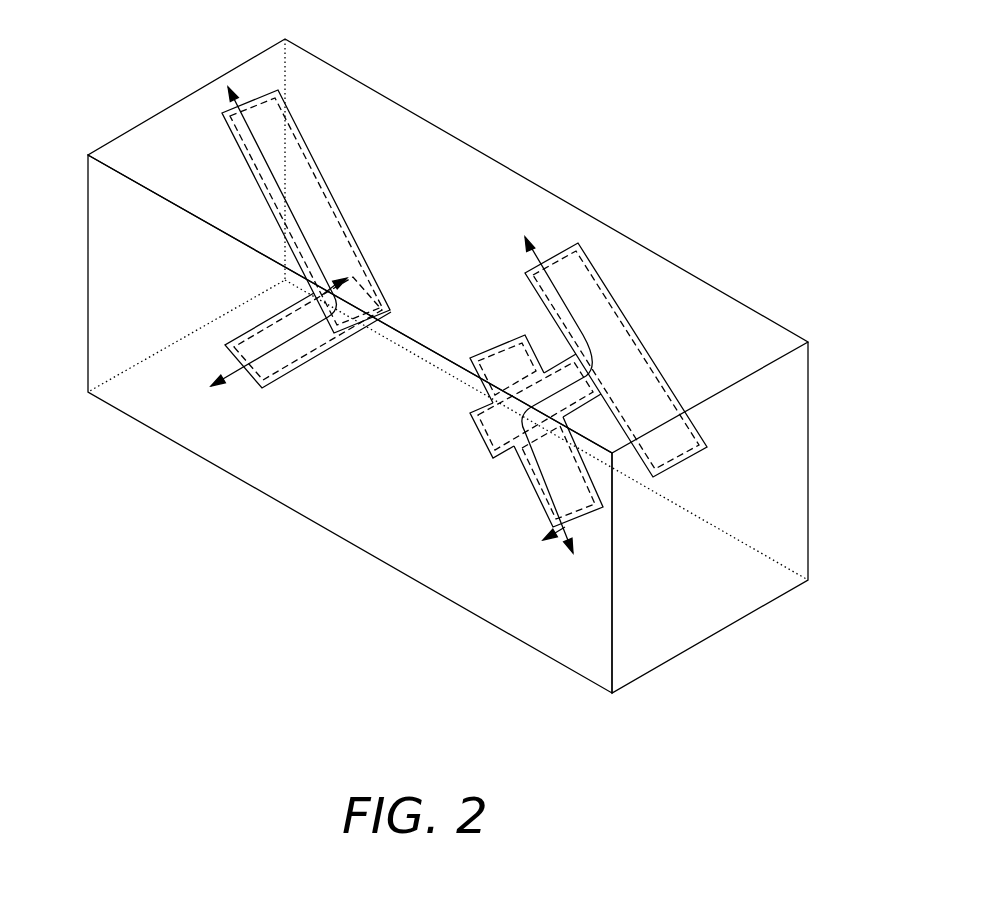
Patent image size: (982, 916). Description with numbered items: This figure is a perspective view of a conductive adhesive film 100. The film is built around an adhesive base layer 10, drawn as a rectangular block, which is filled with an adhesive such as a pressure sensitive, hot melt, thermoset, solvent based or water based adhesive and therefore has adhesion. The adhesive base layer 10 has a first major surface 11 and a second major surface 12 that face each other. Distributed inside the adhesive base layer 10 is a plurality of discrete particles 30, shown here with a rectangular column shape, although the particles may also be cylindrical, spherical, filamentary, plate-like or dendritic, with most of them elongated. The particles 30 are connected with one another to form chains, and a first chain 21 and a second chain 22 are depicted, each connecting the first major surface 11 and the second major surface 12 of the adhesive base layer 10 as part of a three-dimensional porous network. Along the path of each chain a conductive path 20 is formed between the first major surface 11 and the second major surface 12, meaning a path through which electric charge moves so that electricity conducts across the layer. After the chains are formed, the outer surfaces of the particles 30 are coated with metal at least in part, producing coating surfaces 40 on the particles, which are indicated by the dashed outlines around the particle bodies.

The conductive adhesive film 100 is at (505, 47).
The adhesive base layer 10 is at (460, 366).
The first major surface 11 is at (130, 143).
The second major surface 12 is at (187, 412).
The conductive path 20 is at (399, 406).
The first chain 21 is at (265, 397).
The second chain 22 is at (543, 540).
The particles 30 is at (315, 193).
The coating surfaces 40 is at (263, 177).